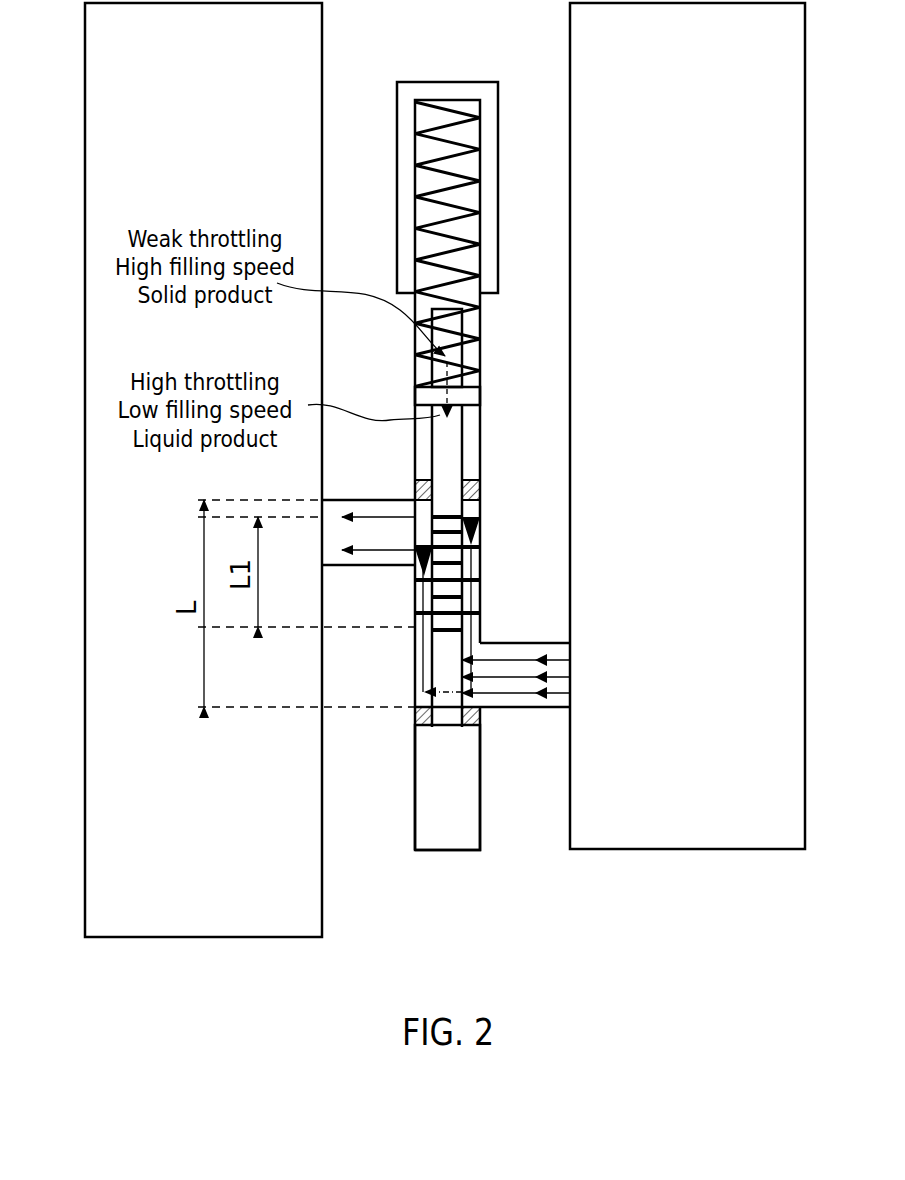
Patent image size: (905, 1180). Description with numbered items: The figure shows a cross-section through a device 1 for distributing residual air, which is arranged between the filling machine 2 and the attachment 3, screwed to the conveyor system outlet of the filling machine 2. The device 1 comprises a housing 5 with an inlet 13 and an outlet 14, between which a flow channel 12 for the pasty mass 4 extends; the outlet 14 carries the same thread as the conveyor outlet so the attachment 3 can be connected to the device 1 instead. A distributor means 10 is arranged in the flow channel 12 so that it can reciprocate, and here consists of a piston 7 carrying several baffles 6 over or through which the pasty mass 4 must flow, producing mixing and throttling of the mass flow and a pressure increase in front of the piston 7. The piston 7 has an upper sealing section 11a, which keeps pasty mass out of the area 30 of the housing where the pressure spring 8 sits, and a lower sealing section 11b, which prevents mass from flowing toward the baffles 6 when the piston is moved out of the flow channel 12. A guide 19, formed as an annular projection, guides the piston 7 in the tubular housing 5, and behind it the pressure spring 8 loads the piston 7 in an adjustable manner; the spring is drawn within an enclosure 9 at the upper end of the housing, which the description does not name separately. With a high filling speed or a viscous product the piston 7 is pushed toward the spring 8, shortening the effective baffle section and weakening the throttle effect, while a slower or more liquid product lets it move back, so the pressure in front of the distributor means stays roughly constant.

The device for distributing residual air 1 is at (512, 60).
The filling machine 2 is at (696, 394).
The attachment 3 is at (213, 139).
The pasty mass 4 is at (520, 696).
The housing 5 is at (528, 643).
The baffles 6 is at (482, 576).
The piston 7 is at (455, 432).
The pressure spring 8 is at (481, 207).
The spring housing 9 is at (499, 112).
The distributor means 10 is at (482, 590).
The upper sealing section 11a is at (415, 490).
The lower sealing section 11b is at (478, 720).
The flow channel 12 is at (423, 650).
The inlet 13 is at (572, 675).
The outlet 14 is at (322, 542).
The guide 19 is at (478, 396).
The area of the housing 30 is at (476, 325).